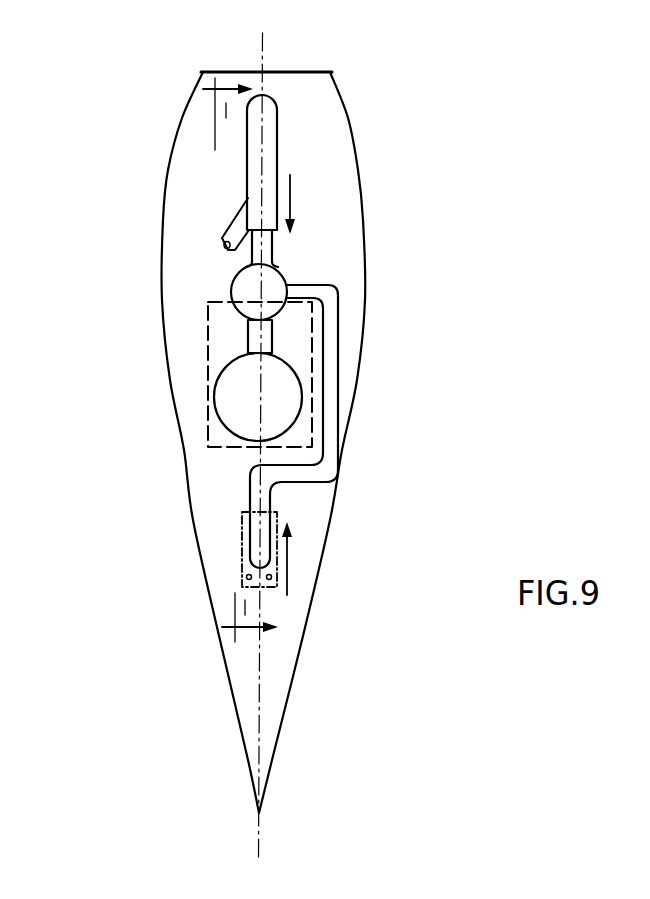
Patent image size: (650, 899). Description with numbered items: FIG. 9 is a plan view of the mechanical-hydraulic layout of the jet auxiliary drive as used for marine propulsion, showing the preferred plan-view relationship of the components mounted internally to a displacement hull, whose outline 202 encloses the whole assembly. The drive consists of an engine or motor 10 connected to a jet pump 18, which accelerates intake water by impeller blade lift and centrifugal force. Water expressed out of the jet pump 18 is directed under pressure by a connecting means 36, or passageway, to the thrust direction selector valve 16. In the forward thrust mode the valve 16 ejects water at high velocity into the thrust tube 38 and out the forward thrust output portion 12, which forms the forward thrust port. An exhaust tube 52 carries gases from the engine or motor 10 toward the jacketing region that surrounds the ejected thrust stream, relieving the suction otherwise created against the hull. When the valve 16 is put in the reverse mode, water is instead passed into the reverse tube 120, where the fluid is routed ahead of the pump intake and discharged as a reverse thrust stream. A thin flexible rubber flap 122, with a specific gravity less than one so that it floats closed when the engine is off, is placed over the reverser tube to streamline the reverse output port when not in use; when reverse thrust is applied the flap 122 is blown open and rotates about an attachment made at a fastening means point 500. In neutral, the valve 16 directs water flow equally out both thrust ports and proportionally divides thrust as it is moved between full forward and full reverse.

The streamlined housing 202 is at (320, 72).
The forward thrust output portion 12 is at (278, 148).
The exhaust tube 52 is at (248, 218).
The thrust tube 38 is at (275, 252).
The thrust direction selector valve 16 is at (287, 278).
The connecting means 36 is at (272, 340).
The jet pump 18 is at (302, 405).
The reverse tube 120 is at (333, 368).
The engine or motor 10 is at (310, 443).
The flap 122 is at (285, 515).
The fastening means point 500 is at (280, 580).